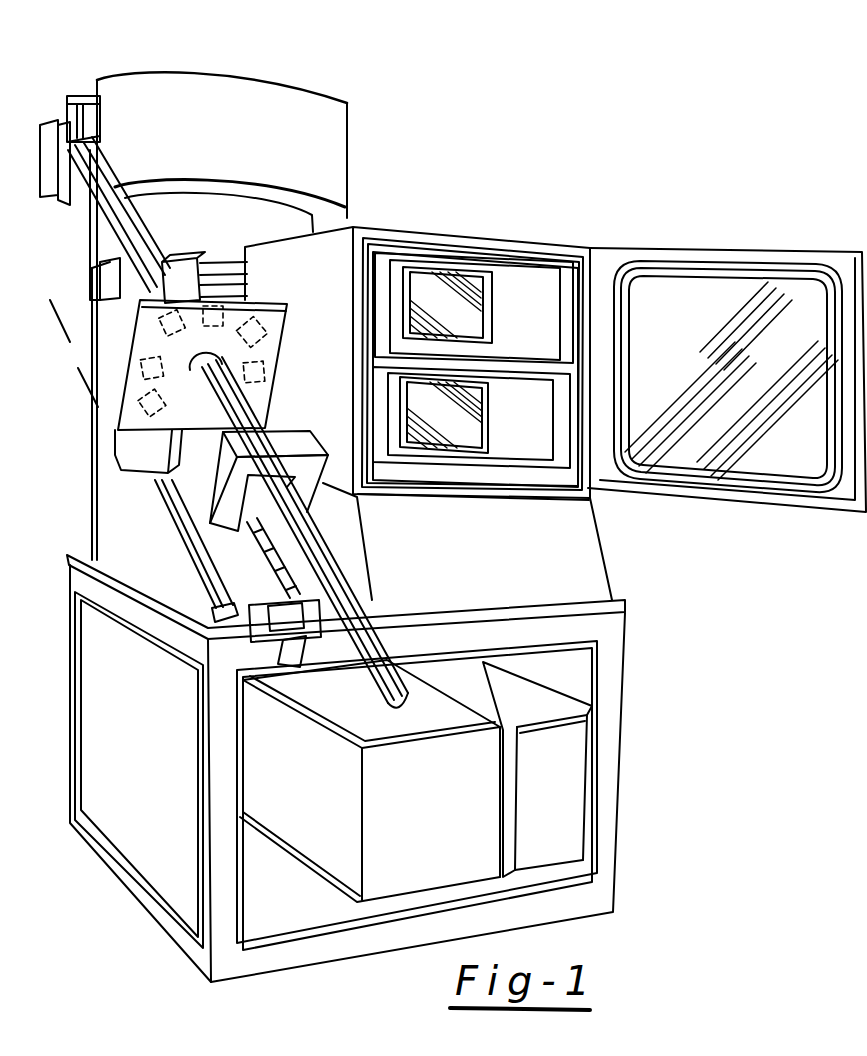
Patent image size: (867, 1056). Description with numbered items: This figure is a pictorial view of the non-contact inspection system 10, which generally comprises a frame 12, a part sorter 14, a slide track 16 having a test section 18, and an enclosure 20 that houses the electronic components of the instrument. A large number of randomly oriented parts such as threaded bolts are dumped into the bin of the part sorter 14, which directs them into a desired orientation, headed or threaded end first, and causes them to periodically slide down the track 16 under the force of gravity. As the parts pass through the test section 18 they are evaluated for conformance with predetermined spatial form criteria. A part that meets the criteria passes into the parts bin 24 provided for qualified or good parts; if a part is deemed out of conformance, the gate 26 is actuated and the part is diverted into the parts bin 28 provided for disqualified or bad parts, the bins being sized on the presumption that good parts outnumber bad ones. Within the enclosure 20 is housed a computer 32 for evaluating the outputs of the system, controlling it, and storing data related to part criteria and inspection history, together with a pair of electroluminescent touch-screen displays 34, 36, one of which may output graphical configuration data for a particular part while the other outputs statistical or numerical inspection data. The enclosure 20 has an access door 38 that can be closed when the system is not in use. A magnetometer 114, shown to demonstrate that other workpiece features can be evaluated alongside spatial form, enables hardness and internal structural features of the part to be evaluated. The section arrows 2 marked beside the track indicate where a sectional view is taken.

The inspection system 10 is at (451, 162).
The frame 12 is at (620, 695).
The part sorter 14 is at (216, 110).
The slide track 16 is at (100, 228).
The test section 18 is at (32, 412).
The enclosure 20 is at (458, 234).
The parts bin 24 is at (403, 870).
The gate 26 is at (395, 630).
The parts bin 28 is at (566, 820).
The computer 32 is at (570, 572).
The display 34 is at (467, 313).
The display 36 is at (467, 415).
The access door 38 is at (710, 248).
The magnetometer 114 is at (213, 488).
The section line 2 is at (91, 393).